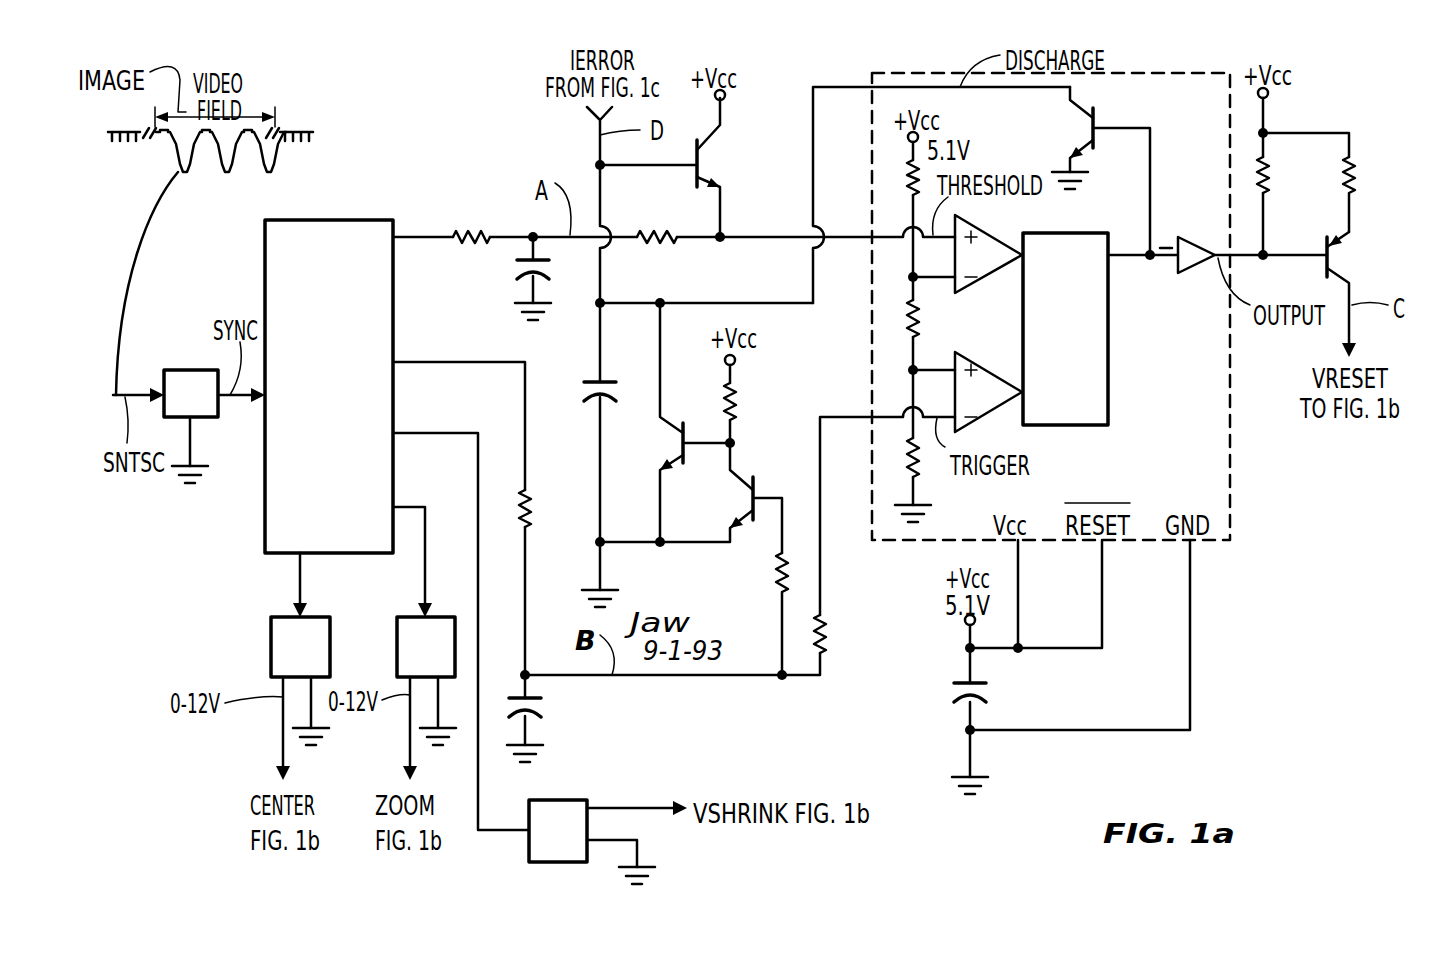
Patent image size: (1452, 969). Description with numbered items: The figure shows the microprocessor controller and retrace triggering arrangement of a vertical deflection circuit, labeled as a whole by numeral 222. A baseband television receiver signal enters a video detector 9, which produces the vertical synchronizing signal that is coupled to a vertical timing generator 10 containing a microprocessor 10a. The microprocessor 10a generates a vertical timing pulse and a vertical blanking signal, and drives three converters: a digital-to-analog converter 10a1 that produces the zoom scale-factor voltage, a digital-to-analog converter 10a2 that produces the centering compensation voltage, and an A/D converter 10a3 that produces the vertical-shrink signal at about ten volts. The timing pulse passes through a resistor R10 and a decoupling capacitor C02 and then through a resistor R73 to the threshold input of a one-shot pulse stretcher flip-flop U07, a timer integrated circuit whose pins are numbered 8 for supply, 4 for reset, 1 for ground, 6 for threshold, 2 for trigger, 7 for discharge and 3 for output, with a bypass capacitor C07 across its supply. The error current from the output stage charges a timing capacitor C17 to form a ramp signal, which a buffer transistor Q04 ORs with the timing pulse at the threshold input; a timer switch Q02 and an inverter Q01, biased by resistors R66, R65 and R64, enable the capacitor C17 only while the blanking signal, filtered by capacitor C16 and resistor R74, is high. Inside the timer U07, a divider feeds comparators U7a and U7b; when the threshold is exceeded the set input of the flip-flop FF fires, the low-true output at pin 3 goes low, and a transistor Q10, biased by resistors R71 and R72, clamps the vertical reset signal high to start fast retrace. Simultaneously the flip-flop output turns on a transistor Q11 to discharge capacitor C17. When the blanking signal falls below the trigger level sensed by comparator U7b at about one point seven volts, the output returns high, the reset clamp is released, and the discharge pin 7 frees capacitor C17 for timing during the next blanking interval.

The video detector 9 is at (183, 370).
The vertical timing generator 10 is at (570, 474).
The microprocessor 10a is at (280, 222).
The digital-to-analog converter 10a1 is at (397, 637).
The digital-to-analog converter 10a2 is at (271, 637).
The A/D converter 10a3 is at (529, 858).
The vertical control circuit 222 is at (170, 602).
The discharge pin 7 is at (941, 181).
The threshold pin of U07 6 is at (855, 225).
The trigger pin of U07 2 is at (851, 405).
The output pin 3 is at (1217, 250).
The Vcc pin of U07 8 is at (1025, 596).
The reset pin of U07 4 is at (1049, 594).
The ground pin of U07 1 is at (1091, 635).
The resistor 4.7K R10 is at (472, 206).
The capacitor 4700pF C02 is at (499, 276).
The resistor R73 is at (655, 206).
The buffer transistor Q04 is at (743, 166).
The timing capacitor C17 is at (575, 393).
The resistor 4.7K R64 is at (549, 514).
The timer switch Q02 is at (677, 422).
The inverter Q01 is at (691, 498).
The resistor 8.2K R66 is at (764, 399).
The resistor 10K R65 is at (752, 614).
The resistor 4.7K R74 is at (737, 543).
The capacitor 4700pF C16 is at (558, 718).
The pulse stretcher flip-flop U07 is at (1051, 306).
The threshold comparator U7a is at (1000, 260).
The comparator U7b is at (1007, 340).
The flip-flop FF is at (1108, 345).
The transistor Q11 is at (1092, 171).
The resistor 2.2K R71 is at (1303, 171).
The resistor 3.9K R72 is at (1381, 191).
The transistor Q10 is at (1352, 294).
The capacitor 0.1uF C07 is at (997, 704).